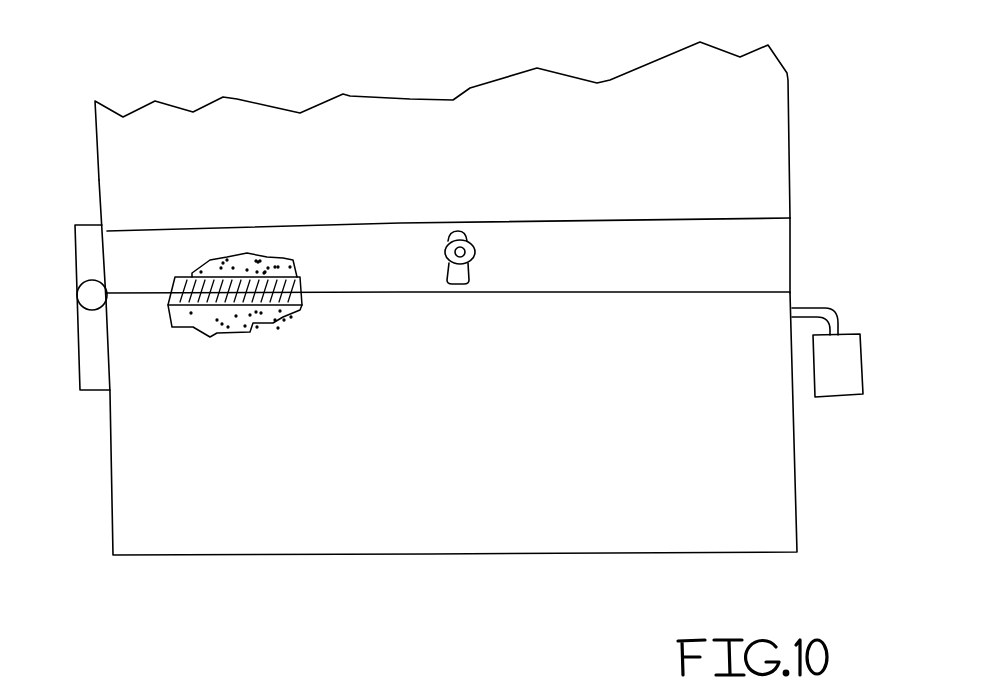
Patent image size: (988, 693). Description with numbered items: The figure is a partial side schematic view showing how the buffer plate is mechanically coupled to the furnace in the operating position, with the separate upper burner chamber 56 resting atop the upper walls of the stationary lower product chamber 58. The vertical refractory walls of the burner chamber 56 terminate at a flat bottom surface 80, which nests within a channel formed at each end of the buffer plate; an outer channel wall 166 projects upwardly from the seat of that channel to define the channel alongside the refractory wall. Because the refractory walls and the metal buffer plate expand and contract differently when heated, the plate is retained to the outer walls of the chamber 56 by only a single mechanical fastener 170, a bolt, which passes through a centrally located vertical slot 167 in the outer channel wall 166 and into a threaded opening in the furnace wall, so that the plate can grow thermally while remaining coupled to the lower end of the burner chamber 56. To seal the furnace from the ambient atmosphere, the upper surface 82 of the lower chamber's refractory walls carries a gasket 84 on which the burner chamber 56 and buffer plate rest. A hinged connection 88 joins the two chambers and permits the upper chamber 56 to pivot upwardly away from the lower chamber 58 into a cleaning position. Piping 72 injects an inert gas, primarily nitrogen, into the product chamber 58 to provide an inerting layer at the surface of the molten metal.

The upper burner chamber 56 is at (770, 137).
The lower product chamber 58 is at (755, 465).
The outer channel wall 166 is at (650, 220).
The hinged connection 88 is at (77, 296).
The flat bottom surface 80 is at (240, 282).
The upper surface 82 is at (200, 296).
The gasket 84 is at (290, 307).
The mechanical fastener 170 is at (477, 250).
The vertical slot 167 is at (470, 275).
The piping 72 is at (825, 308).